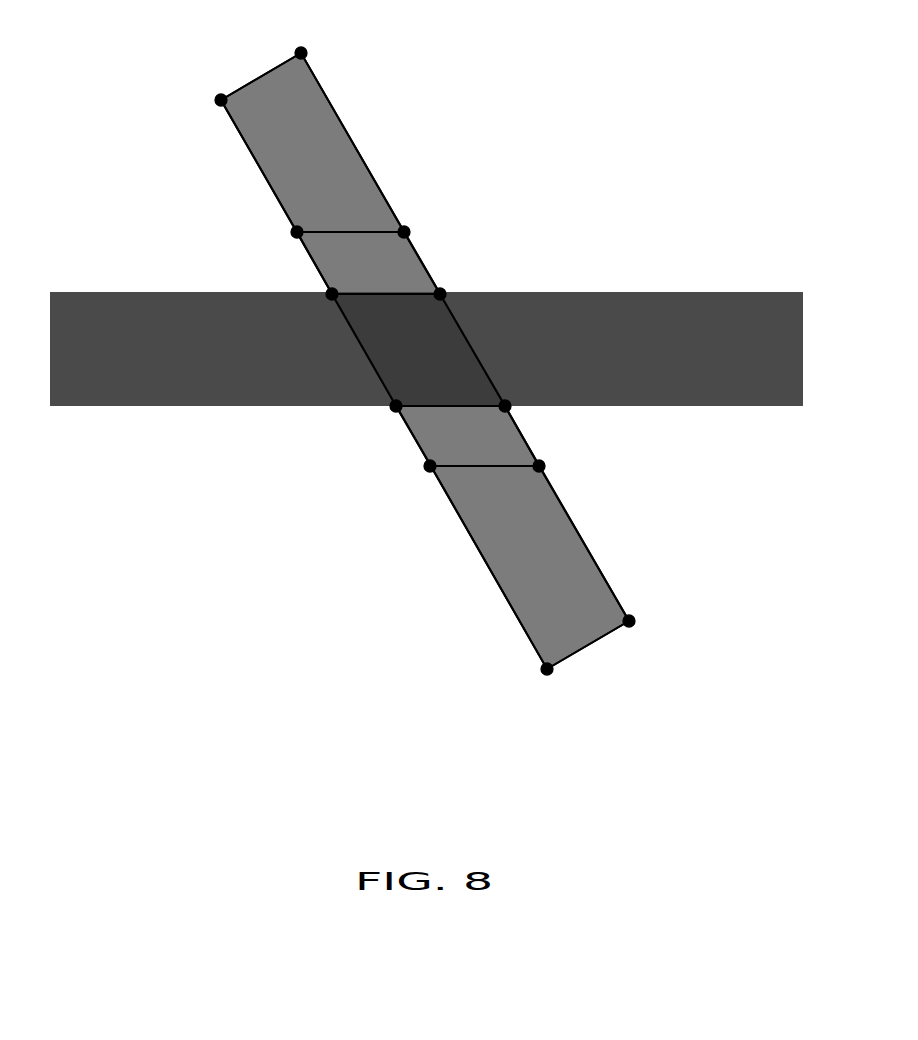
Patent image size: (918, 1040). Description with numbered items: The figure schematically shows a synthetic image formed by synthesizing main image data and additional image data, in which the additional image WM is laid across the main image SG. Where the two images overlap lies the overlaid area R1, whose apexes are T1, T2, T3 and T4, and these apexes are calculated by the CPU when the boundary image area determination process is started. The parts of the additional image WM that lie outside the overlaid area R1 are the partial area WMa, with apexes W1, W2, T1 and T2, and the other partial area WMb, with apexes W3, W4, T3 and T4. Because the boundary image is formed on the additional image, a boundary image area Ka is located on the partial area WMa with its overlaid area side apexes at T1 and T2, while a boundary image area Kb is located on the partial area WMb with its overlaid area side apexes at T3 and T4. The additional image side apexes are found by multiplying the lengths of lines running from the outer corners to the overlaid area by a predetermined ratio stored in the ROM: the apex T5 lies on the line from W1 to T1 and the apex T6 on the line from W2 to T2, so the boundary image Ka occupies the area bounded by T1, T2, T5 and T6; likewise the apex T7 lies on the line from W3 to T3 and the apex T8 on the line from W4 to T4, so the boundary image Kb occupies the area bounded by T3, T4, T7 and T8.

The additional image WM is at (452, 562).
The partial area WMa is at (333, 168).
The other partial area WMb is at (567, 570).
The main image SG is at (132, 412).
The overlaid area R1 is at (415, 353).
The boundary image area Ka is at (390, 262).
The boundary image area Kb is at (425, 428).
The apex W1 is at (197, 100).
The apex W2 is at (327, 45).
The apex W3 is at (529, 685).
The apex W4 is at (652, 622).
The apex T1 is at (311, 284).
The apex T2 is at (454, 283).
The apex T3 is at (379, 418).
The apex T4 is at (525, 418).
The additional image side apex T5 is at (276, 228).
The additional image side apex T6 is at (420, 225).
The additional image side apex T7 is at (419, 481).
The additional image side apex T8 is at (557, 475).